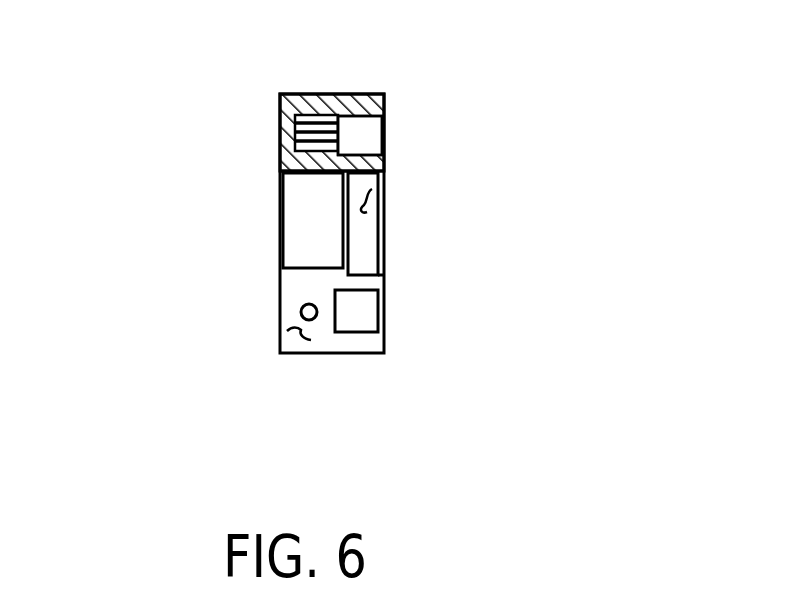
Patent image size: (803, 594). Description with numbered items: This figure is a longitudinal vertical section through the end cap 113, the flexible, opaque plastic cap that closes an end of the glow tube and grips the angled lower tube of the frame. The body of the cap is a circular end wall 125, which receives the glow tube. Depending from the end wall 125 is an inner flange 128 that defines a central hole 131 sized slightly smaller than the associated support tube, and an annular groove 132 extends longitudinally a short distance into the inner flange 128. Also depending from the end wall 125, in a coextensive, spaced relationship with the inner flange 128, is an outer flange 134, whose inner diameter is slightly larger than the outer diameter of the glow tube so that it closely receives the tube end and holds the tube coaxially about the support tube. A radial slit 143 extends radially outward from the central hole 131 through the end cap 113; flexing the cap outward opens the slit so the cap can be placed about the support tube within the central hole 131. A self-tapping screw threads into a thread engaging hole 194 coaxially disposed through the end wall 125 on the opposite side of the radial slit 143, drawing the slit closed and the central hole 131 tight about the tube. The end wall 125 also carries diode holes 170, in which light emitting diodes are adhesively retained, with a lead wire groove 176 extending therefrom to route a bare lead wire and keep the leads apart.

The end cap 113 is at (440, 87).
The circular end wall 125 is at (281, 158).
The inner flange 128 is at (345, 160).
The central hole 131 is at (303, 173).
The annular groove 132 is at (364, 207).
The outer flange 134 is at (357, 95).
The radial slit 143 is at (297, 340).
The diode holes 170 is at (280, 101).
The lead wire groove 176 is at (303, 93).
The thread engaging hole 194 is at (300, 312).